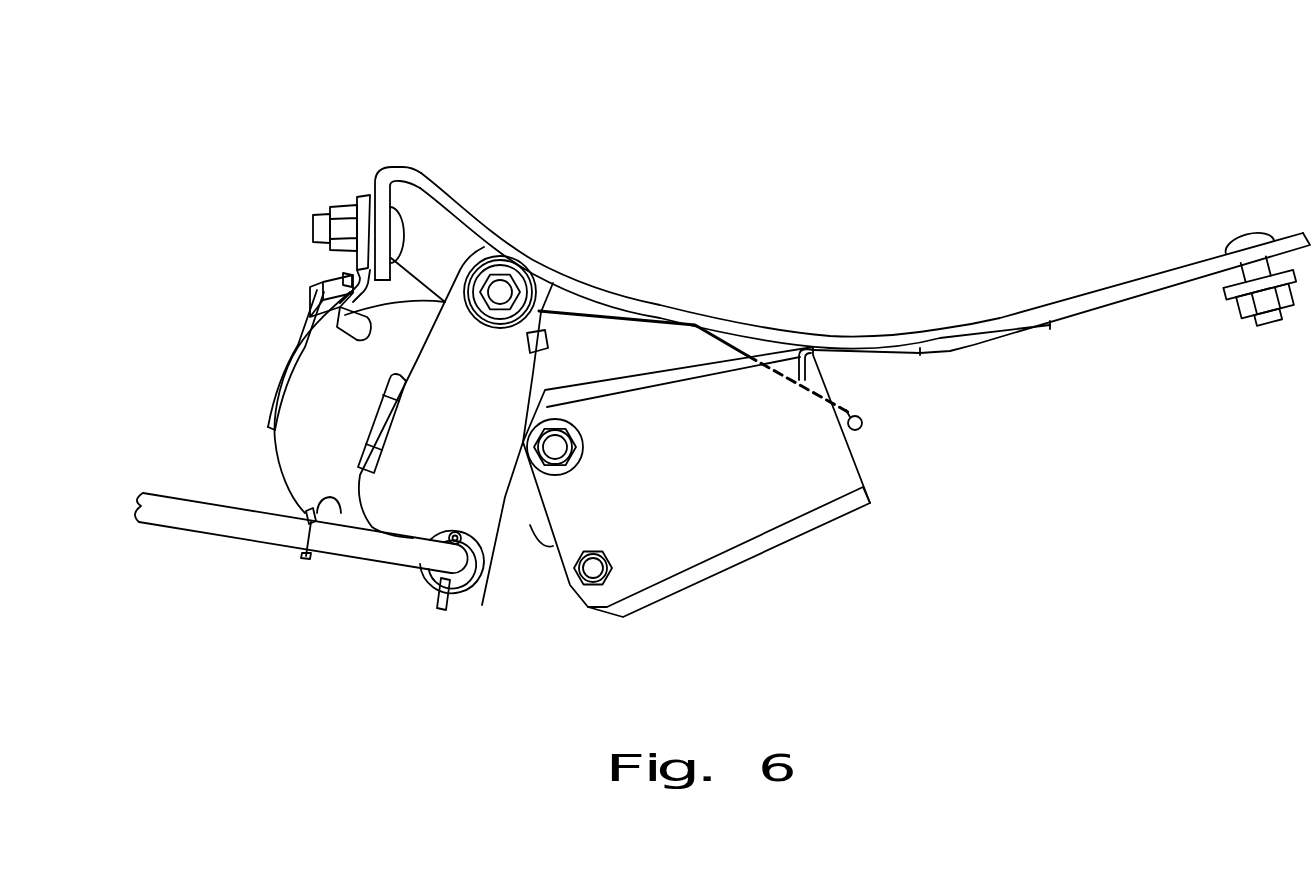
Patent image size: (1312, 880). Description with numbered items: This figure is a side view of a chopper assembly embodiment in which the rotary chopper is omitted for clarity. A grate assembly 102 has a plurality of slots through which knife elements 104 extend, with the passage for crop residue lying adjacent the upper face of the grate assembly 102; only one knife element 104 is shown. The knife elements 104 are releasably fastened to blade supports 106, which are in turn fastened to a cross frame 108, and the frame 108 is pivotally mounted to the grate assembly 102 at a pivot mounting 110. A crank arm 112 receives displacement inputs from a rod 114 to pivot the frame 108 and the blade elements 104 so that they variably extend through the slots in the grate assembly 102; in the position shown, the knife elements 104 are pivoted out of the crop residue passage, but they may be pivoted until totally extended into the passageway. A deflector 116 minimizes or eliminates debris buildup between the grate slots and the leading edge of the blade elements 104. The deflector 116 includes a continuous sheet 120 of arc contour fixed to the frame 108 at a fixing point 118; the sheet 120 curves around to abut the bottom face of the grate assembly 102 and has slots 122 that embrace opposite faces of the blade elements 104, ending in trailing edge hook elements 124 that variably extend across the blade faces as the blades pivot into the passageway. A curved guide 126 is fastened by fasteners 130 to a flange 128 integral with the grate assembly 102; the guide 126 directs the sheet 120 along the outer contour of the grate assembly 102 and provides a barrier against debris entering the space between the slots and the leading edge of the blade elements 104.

The grate assembly 102 is at (603, 283).
The knife elements 104 is at (747, 520).
The blade supports 106 is at (537, 528).
The cross frame 108 is at (365, 437).
The pivot mounting 110 is at (500, 292).
The crank arm 112 is at (480, 500).
The rod 114 is at (197, 528).
The deflector 116 is at (248, 468).
The fixing point 118 is at (305, 556).
The continuous sheet 120 is at (276, 445).
The slots 122 is at (733, 338).
The trailing edge hook elements 124 is at (862, 418).
The curved guide 126 is at (282, 379).
The flange 128 is at (380, 188).
The fasteners 130 is at (333, 210).